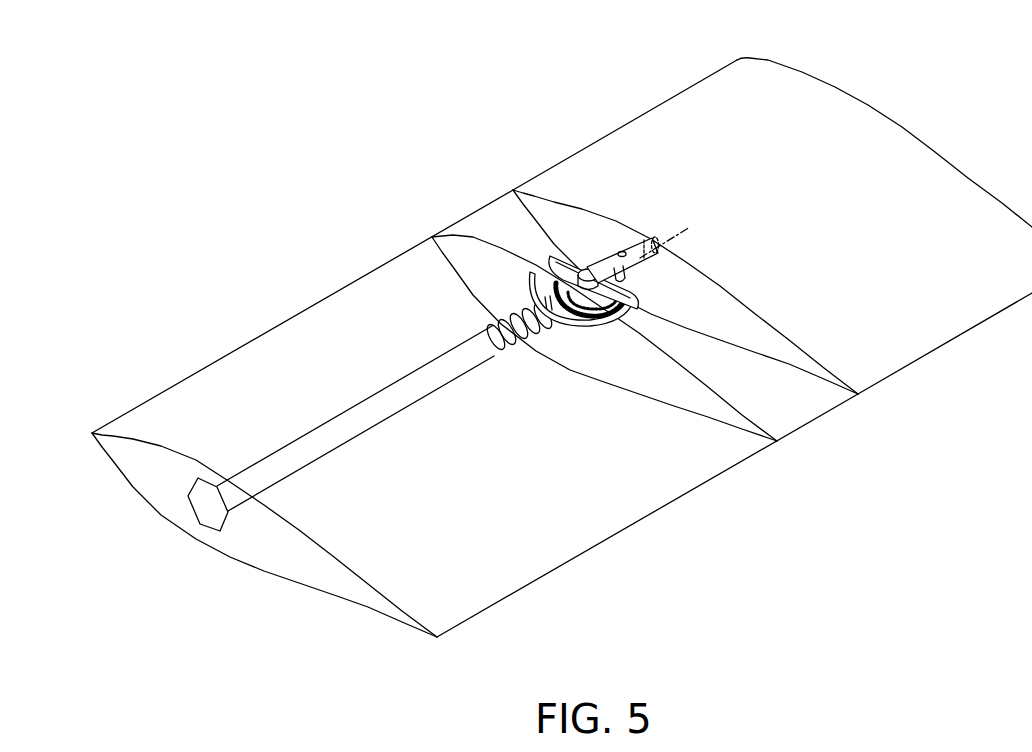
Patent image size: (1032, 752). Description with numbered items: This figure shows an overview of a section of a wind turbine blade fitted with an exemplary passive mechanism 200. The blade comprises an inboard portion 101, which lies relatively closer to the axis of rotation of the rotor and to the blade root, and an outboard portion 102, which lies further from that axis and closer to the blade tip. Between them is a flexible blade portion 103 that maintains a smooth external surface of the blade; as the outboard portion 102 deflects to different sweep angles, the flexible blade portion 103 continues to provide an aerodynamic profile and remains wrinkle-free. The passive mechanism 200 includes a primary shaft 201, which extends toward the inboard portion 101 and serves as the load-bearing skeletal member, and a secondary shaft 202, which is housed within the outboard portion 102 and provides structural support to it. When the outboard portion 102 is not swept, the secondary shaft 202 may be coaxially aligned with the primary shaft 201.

The inboard portion 101 is at (562, 336).
The outboard portion 102 is at (275, 357).
The flexible blade portion 103 is at (784, 393).
The passive mechanism 200 is at (537, 375).
The primary shaft 201 is at (642, 236).
The secondary shaft 202 is at (348, 425).